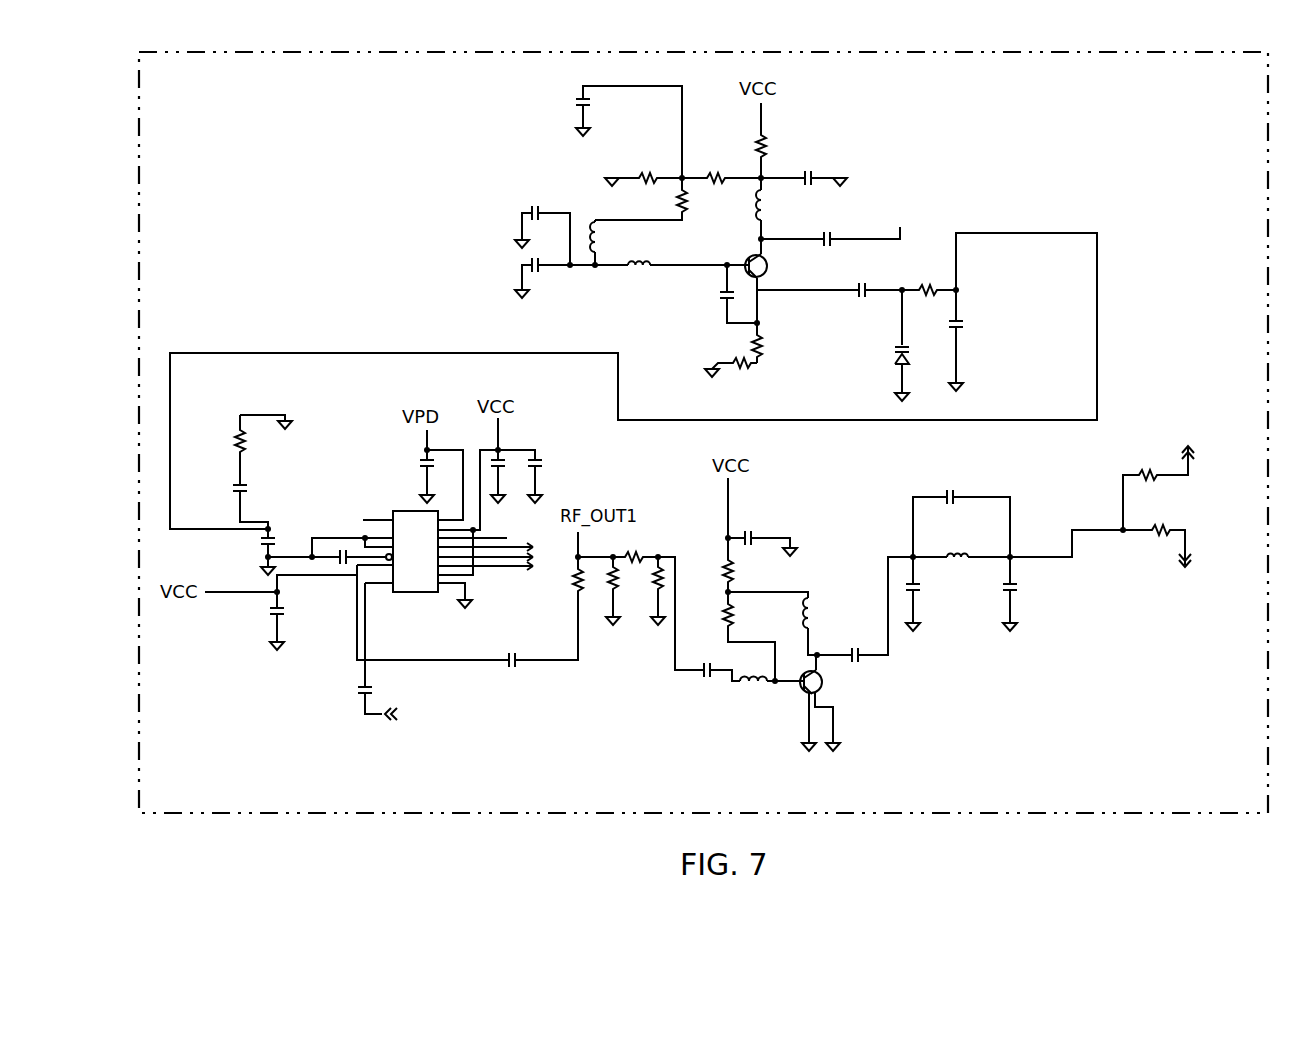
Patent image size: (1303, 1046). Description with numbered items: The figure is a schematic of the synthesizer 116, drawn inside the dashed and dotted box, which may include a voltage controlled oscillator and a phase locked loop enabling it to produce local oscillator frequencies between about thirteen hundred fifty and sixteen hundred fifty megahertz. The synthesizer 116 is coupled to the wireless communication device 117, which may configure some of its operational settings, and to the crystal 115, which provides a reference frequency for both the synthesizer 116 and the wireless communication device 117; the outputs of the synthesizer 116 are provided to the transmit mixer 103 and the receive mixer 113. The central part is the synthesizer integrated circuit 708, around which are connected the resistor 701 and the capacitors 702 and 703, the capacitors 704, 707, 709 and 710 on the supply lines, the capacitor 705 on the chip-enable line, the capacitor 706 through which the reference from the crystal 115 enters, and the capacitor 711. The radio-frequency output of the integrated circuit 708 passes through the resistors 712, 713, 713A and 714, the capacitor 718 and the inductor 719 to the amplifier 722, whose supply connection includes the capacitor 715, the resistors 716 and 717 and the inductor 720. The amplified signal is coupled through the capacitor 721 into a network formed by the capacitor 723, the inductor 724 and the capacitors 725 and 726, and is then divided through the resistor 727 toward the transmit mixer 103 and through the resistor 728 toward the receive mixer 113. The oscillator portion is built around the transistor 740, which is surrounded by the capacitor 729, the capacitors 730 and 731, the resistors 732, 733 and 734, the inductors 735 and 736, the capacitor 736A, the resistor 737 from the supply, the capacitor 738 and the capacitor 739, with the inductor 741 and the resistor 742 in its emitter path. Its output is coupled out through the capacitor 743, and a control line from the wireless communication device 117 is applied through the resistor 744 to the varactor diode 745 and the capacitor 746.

The synthesizer 116 is at (365, 124).
The wireless communication device 117 is at (716, 363).
The crystal 115 is at (474, 722).
The transmit mixer 103 is at (1221, 415).
The receive mixer 113 is at (1221, 586).
The resistor 701 is at (244, 450).
The capacitor 702 is at (232, 503).
The capacitor 703 is at (250, 550).
The capacitor 704 is at (281, 612).
The capacitor 705 is at (330, 558).
The capacitor 706 is at (384, 648).
The capacitor 707 is at (422, 475).
The synthesizer integrated circuit 708 is at (461, 559).
The capacitor 709 is at (471, 475).
The capacitor 710 is at (537, 476).
The capacitor 711 is at (467, 616).
The resistor 712 is at (564, 596).
The resistor 713 is at (629, 591).
The resistor 713A is at (641, 597).
The resistor 714 is at (642, 591).
The capacitor 715 is at (761, 517).
The resistor 716 is at (746, 566).
The resistor 717 is at (749, 636).
The capacitor 718 is at (710, 683).
The inductor 719 is at (767, 694).
The inductor 720 is at (787, 624).
The capacitor 721 is at (865, 609).
The amplifier 722 is at (829, 703).
The capacitor 723 is at (961, 513).
The inductor 724 is at (1018, 543).
The capacitor 725 is at (933, 594).
The capacitor 726 is at (1028, 594).
The resistor 727 is at (1157, 489).
The resistor 728 is at (1157, 551).
The capacitor 729 is at (604, 132).
The capacitor 730 is at (542, 220).
The capacitor 731 is at (555, 278).
The resistor 732 is at (643, 167).
The resistor 733 is at (720, 166).
The resistor 734 is at (658, 199).
The inductor 735 is at (612, 244).
The inductor 736 is at (672, 278).
The capacitor 736A is at (712, 294).
The resistor 737 is at (780, 142).
The capacitor 738 is at (804, 167).
The capacitor 739 is at (828, 212).
The transistor 740 is at (775, 282).
The inductor 741 is at (775, 343).
The resistor 742 is at (736, 374).
The capacitor 743 is at (831, 301).
The resistor 744 is at (930, 277).
The varactor diode 745 is at (883, 345).
The capacitor 746 is at (975, 340).